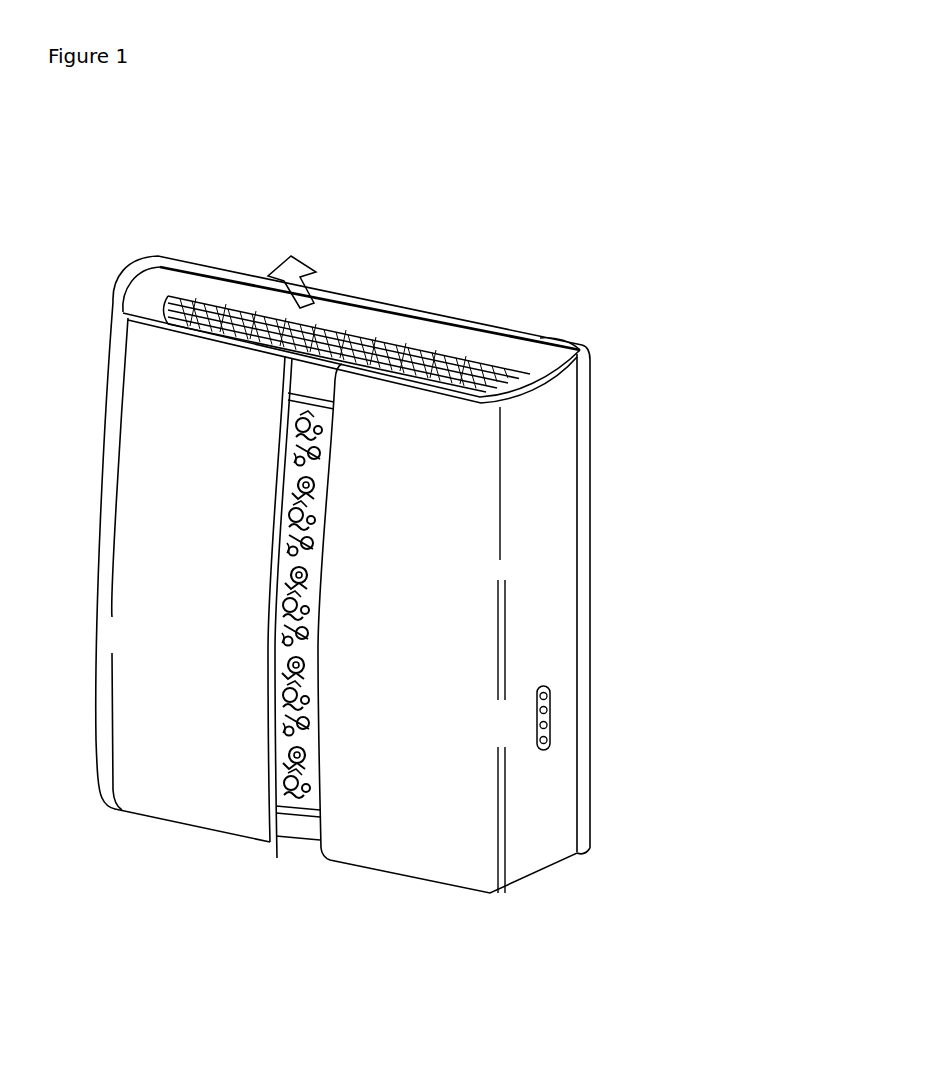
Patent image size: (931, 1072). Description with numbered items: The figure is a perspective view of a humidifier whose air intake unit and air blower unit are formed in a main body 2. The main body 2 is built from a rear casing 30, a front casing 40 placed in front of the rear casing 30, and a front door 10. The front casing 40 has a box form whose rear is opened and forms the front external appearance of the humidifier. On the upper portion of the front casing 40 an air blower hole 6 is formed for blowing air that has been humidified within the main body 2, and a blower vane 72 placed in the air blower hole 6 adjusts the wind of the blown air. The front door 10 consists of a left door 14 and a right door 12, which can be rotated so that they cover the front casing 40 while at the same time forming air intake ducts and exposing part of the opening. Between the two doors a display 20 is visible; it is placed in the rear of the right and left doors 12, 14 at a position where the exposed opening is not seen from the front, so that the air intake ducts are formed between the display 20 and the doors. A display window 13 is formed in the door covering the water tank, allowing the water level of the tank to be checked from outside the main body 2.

The main body 2 is at (622, 300).
The air blower hole 6 is at (505, 348).
The front door 10 is at (212, 955).
The right door 12 is at (377, 818).
The display window 13 is at (545, 715).
The left door 14 is at (229, 792).
The display 20 is at (276, 803).
The rear casing 30 is at (560, 350).
The front casing 40 is at (522, 375).
The blower vane 72 is at (236, 296).